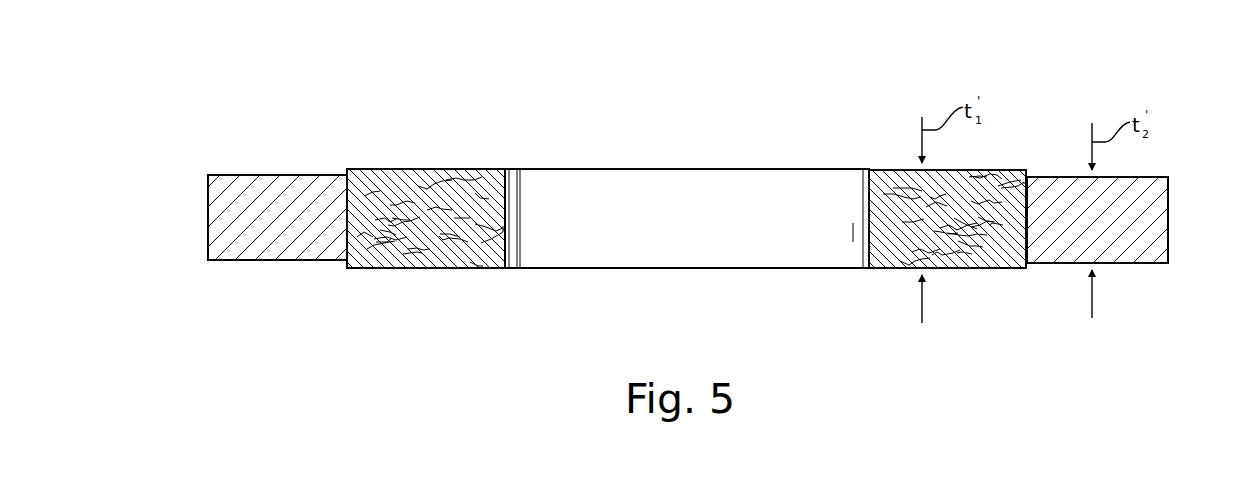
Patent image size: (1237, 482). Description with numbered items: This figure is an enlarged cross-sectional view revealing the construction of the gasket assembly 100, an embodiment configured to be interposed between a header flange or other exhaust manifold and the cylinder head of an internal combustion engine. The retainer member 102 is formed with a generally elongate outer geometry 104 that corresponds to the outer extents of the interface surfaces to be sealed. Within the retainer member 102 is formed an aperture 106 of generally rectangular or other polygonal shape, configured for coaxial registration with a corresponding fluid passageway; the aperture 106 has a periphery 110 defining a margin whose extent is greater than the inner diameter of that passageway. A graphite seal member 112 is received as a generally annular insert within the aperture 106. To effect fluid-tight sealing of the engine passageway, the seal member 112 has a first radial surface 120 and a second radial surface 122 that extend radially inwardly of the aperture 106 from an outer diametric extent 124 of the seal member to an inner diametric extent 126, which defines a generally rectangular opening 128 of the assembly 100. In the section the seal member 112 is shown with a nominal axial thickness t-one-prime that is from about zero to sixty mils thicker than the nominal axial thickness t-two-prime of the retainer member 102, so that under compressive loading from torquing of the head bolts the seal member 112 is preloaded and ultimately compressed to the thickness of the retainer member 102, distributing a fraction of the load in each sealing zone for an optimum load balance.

The gasket assembly 100 is at (895, 70).
The retainer member 102 is at (1138, 178).
The outer geometry 104 is at (208, 218).
The aperture 106 is at (362, 204).
The periphery 110 is at (347, 223).
The graphite seal member 112 is at (993, 170).
The first radial surface 120 is at (476, 169).
The second radial surface 122 is at (437, 268).
The outer diametric extent 124 is at (347, 237).
The inner diametric extent 126 is at (505, 223).
The rectangular opening 128 is at (692, 236).